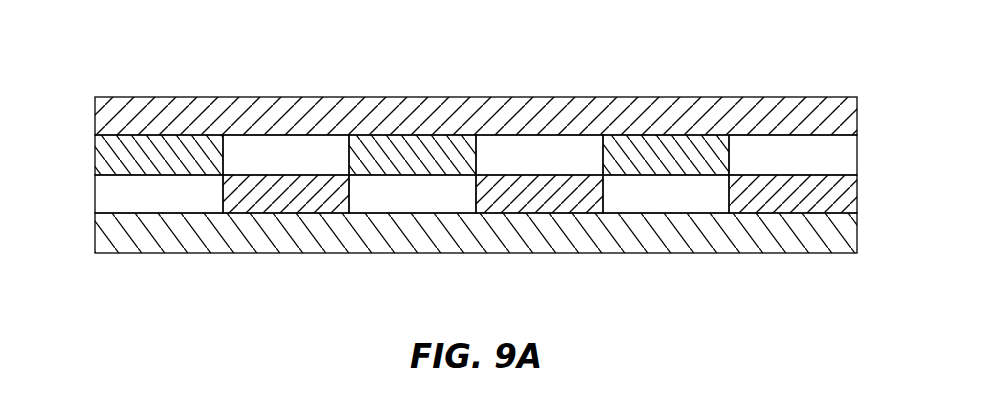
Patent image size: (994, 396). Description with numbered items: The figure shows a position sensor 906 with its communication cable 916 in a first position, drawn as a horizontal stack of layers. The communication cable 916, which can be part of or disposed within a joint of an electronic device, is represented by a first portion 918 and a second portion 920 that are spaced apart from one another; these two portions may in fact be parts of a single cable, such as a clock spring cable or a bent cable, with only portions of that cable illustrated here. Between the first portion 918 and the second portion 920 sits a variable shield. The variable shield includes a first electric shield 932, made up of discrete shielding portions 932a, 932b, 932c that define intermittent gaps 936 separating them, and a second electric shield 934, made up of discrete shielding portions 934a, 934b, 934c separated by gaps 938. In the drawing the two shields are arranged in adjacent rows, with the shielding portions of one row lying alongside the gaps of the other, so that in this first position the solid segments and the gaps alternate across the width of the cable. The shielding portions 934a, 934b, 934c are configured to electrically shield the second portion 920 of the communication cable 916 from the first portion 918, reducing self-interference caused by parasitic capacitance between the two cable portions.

The position sensor 906 is at (479, 173).
The communication cable 916 is at (502, 174).
The first portion 918 is at (89, 292).
The second portion 920 is at (807, 122).
The first electric shield 932 is at (475, 93).
The discrete shielding portion 932a is at (168, 148).
The discrete shielding portion 932b is at (452, 143).
The discrete shielding portion 932c is at (705, 143).
The second electric shield 934 is at (502, 256).
The discrete shielding portion 934a is at (287, 200).
The discrete shielding portion 934b is at (513, 200).
The discrete shielding portion 934c is at (763, 202).
The gaps 936 is at (307, 168).
The gaps 938 is at (181, 207).